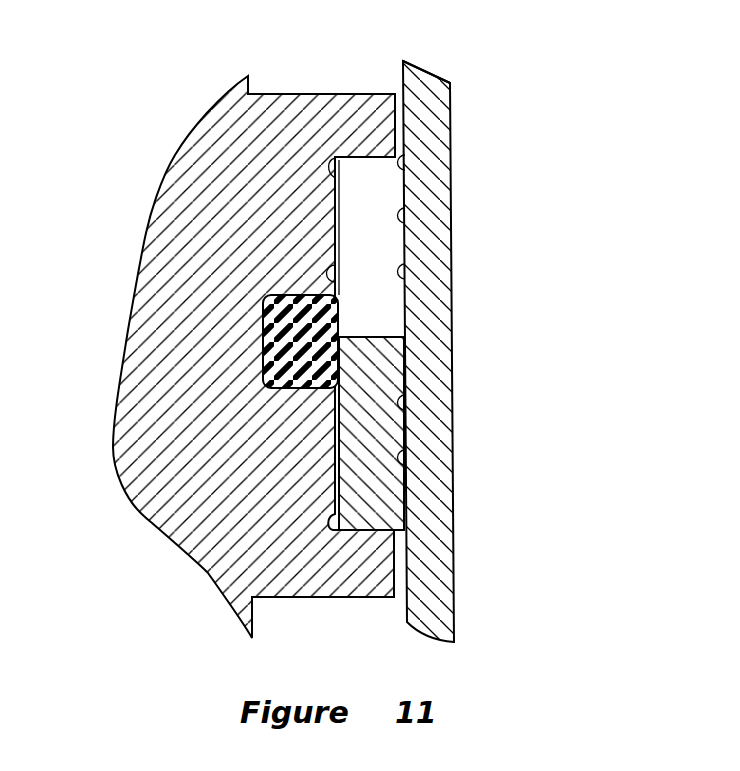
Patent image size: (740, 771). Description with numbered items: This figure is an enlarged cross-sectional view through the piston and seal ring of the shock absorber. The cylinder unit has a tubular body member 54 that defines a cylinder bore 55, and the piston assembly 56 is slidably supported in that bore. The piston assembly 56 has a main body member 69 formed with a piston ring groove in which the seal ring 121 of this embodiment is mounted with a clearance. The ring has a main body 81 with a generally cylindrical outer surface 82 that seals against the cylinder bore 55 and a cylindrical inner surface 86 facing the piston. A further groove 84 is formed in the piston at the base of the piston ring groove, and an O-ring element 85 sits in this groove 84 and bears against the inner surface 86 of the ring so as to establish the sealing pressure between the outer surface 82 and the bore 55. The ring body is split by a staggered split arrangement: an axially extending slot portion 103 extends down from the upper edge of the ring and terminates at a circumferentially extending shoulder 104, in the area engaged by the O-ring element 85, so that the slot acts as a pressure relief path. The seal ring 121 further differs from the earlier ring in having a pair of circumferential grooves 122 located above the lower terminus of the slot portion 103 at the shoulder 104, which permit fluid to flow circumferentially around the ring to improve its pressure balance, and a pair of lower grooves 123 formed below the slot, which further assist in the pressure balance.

The tubular body member 54 is at (448, 323).
The cylinder bore 55 is at (403, 82).
The piston assembly 56 is at (225, 357).
The main body member 69 is at (185, 253).
The main body 81 is at (464, 431).
The outer surface 82 is at (403, 153).
The groove 84 is at (199, 334).
The O-ring element 85 is at (258, 370).
The cylindrical inner surface 86 is at (322, 275).
The slot portion 103 is at (367, 180).
The shoulder 104 is at (377, 336).
The seal ring 121 is at (380, 202).
The grooves 122 is at (407, 275).
The lower grooves 123 is at (400, 455).